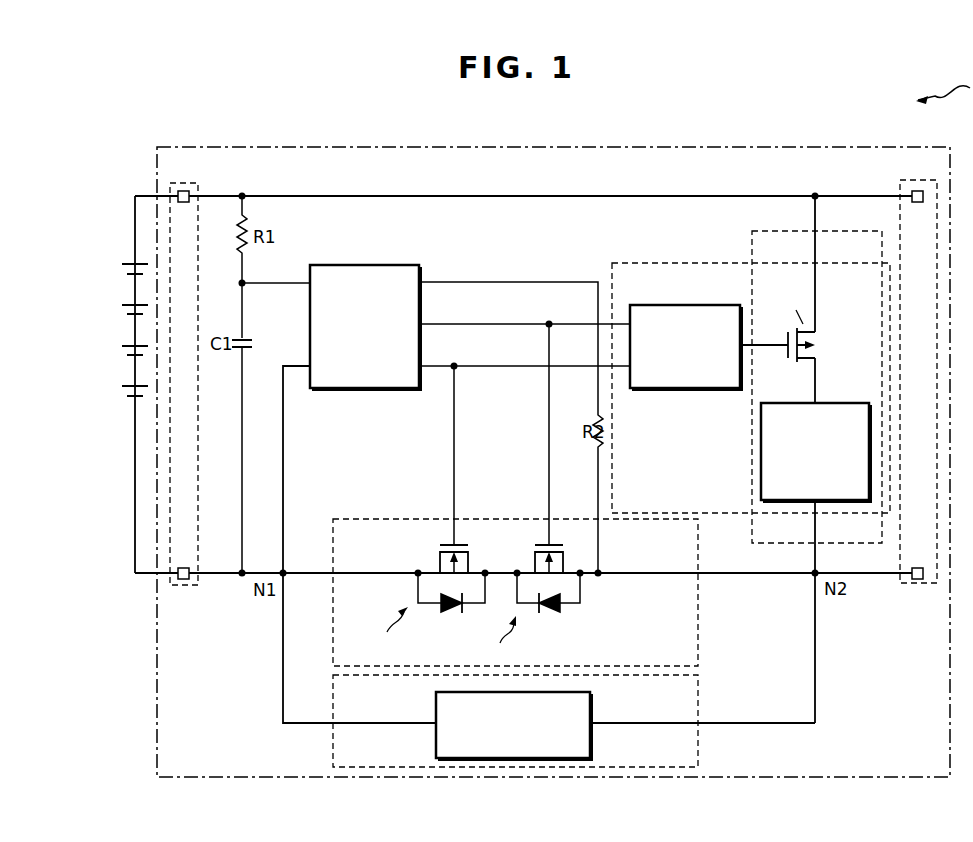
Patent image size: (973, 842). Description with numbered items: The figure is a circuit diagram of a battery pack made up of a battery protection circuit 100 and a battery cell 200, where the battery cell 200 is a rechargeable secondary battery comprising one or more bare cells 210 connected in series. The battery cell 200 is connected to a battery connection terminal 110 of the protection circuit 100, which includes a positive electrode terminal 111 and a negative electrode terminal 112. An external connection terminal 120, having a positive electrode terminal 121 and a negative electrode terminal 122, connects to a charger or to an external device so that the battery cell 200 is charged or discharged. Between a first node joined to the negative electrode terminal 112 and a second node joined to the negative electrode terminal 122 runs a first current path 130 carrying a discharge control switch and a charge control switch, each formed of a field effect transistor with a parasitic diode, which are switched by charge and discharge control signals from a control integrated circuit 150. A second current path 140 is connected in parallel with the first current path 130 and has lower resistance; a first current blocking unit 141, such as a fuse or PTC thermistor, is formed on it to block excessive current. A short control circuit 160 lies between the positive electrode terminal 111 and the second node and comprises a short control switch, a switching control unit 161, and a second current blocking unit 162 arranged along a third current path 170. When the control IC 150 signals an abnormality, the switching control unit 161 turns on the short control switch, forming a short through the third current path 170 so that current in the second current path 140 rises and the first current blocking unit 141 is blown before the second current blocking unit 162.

The battery protection circuit 100 is at (775, 147).
The battery connection terminal 110 is at (203, 386).
The positive electrode terminal 111 is at (183, 190).
The negative electrode terminal 112 is at (183, 580).
The external connection terminal 120 is at (918, 369).
The positive electrode terminal 121 is at (917, 203).
The negative electrode terminal 122 is at (917, 567).
The first current path 130 is at (698, 628).
The second current path 140 is at (543, 721).
The first current blocking unit 141 is at (590, 700).
The control integrated circuit 150 is at (375, 265).
The short control circuit 160 is at (751, 372).
The switching control unit 161 is at (680, 305).
The second current blocking unit 162 is at (838, 403).
The third current path 170 is at (828, 231).
The battery cell 200 is at (93, 332).
The bare cell 210 is at (82, 405).